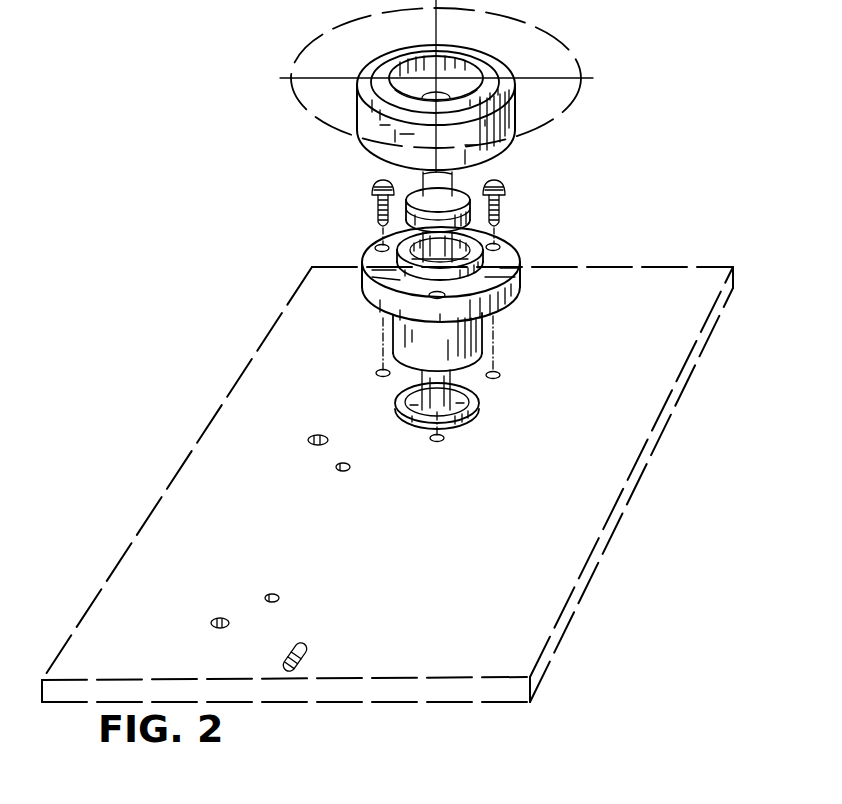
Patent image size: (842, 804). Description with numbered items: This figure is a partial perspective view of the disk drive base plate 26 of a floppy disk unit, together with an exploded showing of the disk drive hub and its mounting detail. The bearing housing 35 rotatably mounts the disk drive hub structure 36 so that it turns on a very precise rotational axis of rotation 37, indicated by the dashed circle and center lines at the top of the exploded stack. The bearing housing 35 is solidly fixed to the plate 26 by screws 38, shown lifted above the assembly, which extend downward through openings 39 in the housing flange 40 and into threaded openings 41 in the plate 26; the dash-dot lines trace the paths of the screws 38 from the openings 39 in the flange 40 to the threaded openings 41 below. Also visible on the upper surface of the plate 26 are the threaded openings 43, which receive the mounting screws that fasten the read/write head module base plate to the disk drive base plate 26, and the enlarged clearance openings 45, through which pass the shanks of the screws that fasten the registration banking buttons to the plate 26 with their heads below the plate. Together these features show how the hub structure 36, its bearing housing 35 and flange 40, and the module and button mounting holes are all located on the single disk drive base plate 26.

The disk drive base plate 26 is at (627, 265).
The bearing housing 35 is at (481, 325).
The disk drive hub structure 36 is at (497, 150).
The rotational axis of rotation 37 is at (413, 26).
The screws 38 is at (372, 207).
The openings 39 is at (377, 248).
The housing flange 40 is at (508, 250).
The threaded openings 41 is at (379, 372).
The threaded openings 43 is at (351, 467).
The enlarged clearance openings 45 is at (309, 442).